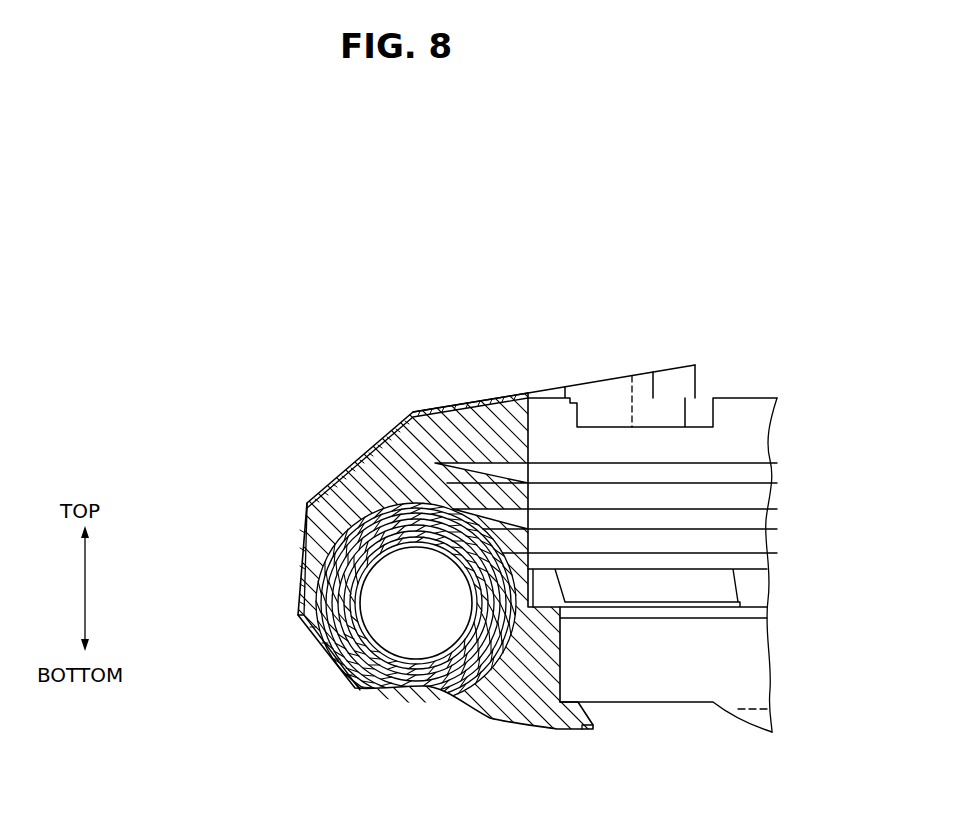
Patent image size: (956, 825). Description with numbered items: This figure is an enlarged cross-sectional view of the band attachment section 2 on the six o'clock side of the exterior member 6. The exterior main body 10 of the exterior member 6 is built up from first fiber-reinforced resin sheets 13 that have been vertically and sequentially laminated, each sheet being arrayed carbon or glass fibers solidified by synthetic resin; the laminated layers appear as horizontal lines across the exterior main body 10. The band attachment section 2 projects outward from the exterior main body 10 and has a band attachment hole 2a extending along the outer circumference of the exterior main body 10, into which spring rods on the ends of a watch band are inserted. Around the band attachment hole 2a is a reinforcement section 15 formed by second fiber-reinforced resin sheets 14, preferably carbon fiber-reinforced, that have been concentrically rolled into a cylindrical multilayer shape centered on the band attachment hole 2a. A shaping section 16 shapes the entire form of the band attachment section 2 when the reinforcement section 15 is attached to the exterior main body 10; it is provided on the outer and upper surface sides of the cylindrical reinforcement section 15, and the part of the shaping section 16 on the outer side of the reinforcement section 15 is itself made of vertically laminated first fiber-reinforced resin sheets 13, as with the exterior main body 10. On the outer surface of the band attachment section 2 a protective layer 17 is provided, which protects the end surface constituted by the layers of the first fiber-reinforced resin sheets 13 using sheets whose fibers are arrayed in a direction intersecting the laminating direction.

The band attachment section 2 is at (314, 495).
The band attachment hole 2a is at (417, 638).
The exterior member 6 is at (661, 357).
The exterior main body 10 is at (737, 415).
The first fiber-reinforced resin sheet 13 is at (757, 517).
The second fiber-reinforced resin sheet 14 is at (352, 678).
The reinforcement section 15 is at (332, 556).
The shaping section 16 is at (475, 440).
The protective layer 17 is at (407, 420).